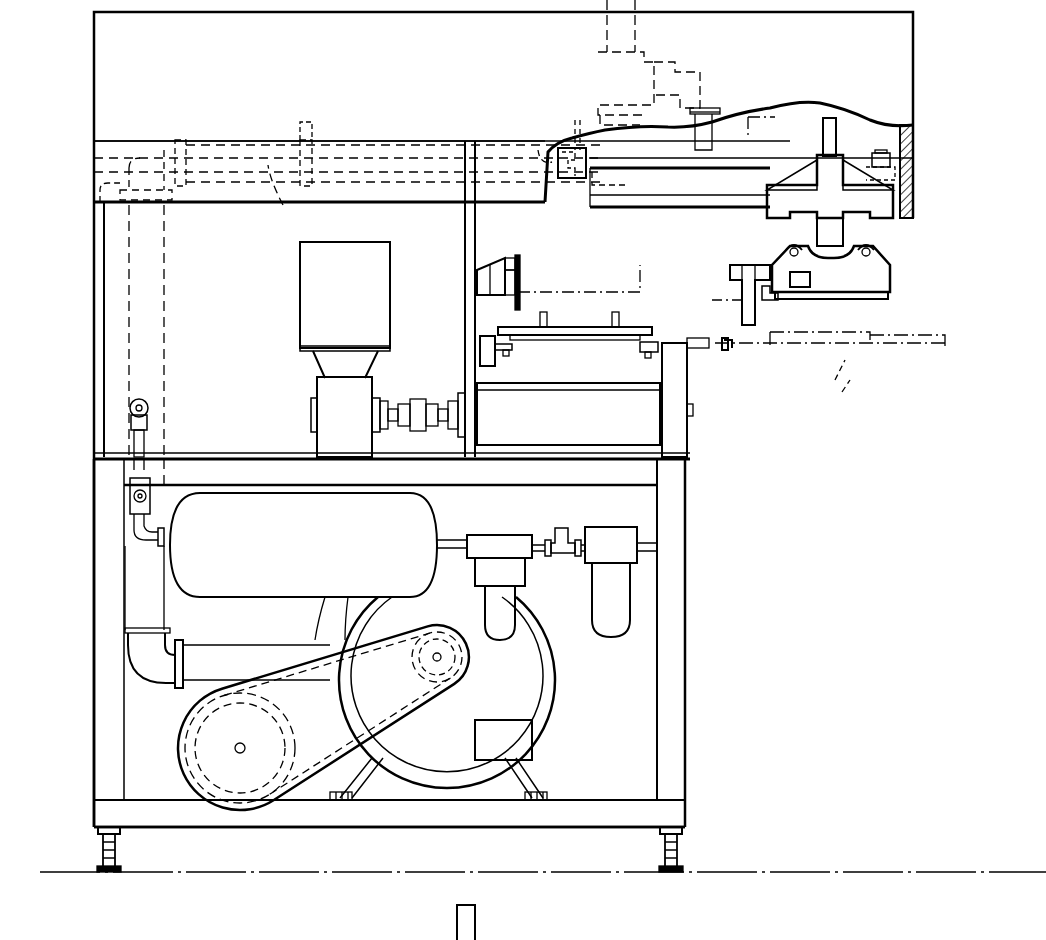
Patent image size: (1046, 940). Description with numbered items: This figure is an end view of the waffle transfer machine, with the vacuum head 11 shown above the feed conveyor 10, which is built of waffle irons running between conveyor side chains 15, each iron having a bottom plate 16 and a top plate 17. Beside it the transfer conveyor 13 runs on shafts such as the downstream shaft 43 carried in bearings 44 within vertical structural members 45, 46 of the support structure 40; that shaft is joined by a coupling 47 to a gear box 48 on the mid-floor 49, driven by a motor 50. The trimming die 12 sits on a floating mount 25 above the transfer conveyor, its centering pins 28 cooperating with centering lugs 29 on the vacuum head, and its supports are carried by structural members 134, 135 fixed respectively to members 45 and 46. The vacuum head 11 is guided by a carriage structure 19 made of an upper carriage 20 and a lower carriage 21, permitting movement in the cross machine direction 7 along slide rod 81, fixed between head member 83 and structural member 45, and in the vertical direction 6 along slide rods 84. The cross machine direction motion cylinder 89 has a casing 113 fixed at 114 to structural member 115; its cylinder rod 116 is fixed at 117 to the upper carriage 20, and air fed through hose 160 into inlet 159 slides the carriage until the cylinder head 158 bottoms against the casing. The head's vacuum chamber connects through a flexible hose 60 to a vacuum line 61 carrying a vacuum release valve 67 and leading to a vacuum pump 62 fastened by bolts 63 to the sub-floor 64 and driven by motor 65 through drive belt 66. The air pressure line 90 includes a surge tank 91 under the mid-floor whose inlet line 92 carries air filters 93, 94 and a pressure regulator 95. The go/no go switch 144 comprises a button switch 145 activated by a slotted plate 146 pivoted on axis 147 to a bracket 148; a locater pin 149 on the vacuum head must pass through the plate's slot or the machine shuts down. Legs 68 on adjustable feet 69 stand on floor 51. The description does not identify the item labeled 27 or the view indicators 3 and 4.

The support structure 40 is at (112, 22).
The vacuum line 61 is at (258, 150).
The hose 160 is at (312, 125).
The cross machine direction motion cylinder 89 is at (412, 140).
The inlet 159 is at (568, 145).
The cylinder head 158 is at (538, 150).
The vacuum release valve 67 is at (660, 52).
The flexible hose 60 is at (710, 112).
The slide rods 84 is at (832, 130).
The fixing point of cylinder rod 117 is at (890, 162).
The head member 83 is at (916, 188).
The structural member 115 is at (110, 170).
The fixing point of cylinder casing 114 is at (282, 205).
The motor 50 is at (355, 260).
The casing 113 is at (562, 180).
The cylinder rod 116 is at (662, 168).
The slide rod 81 is at (690, 205).
The upper carriage 20 is at (760, 178).
The cross machine direction 7 is at (636, 238).
The carriage structure 19 is at (742, 230).
The lower carriage 21 is at (812, 226).
The bracket 148 is at (480, 268).
The button switch 145 is at (514, 262).
The axis 147 is at (520, 260).
The slotted plate 146 is at (522, 276).
The go/no go switch 144 is at (500, 292).
The vertical direction 6 is at (648, 280).
The clamp 27 is at (735, 292).
The locater pin 149 is at (770, 300).
The centering lugs 29 is at (808, 288).
The vacuum head 11 is at (855, 298).
The section line 3 is at (948, 115).
The section line 4 is at (846, 364).
The centering pins 28 is at (596, 330).
The floating mount 25 is at (654, 340).
The structural member 45 is at (472, 332).
The trimming die 12 is at (580, 346).
The structural member 135 is at (712, 346).
The structural member 46 is at (688, 362).
The conveyor side chains 15 is at (730, 355).
The bottom plate 16 is at (872, 350).
The top plate 17 is at (937, 350).
The feed conveyor 10 is at (840, 393).
The coupling 47 is at (422, 402).
The gear box 48 is at (345, 417).
The mid-floor 49 is at (282, 448).
The structural member 134 is at (568, 401).
The downstream shaft 43 is at (692, 412).
The air pressure line 90 is at (150, 432).
The bearings 44 is at (462, 436).
The transfer conveyor 13 is at (574, 436).
The surge tank 91 is at (318, 566).
The air filter 93 is at (520, 520).
The pressure regulator 95 is at (582, 506).
The air filter 94 is at (620, 536).
The inlet line 92 is at (652, 548).
The vacuum pump 62 is at (558, 682).
The drive belt 66 is at (305, 695).
The motor 65 is at (215, 762).
The legs 68 is at (100, 712).
The bolts 63 is at (546, 792).
The sub-floor 64 is at (455, 808).
The adjustable feet 69 is at (120, 850).
The floor 51 is at (612, 872).